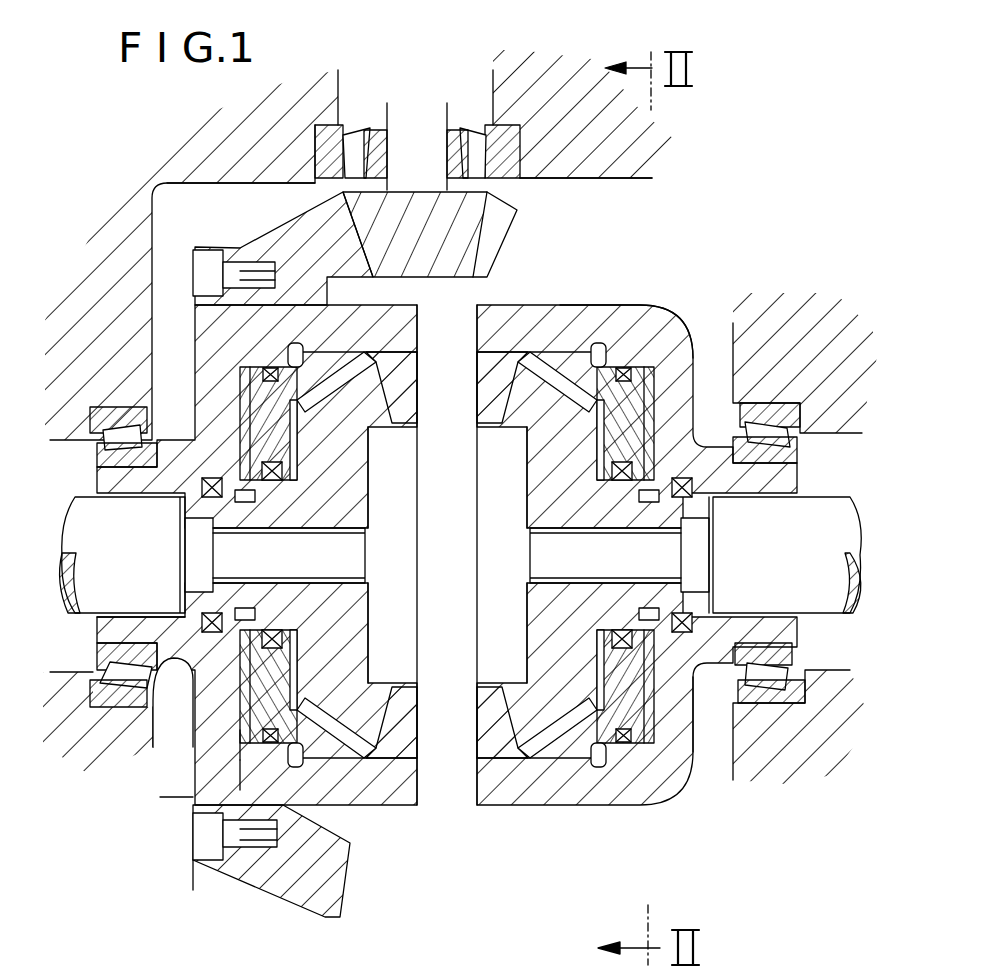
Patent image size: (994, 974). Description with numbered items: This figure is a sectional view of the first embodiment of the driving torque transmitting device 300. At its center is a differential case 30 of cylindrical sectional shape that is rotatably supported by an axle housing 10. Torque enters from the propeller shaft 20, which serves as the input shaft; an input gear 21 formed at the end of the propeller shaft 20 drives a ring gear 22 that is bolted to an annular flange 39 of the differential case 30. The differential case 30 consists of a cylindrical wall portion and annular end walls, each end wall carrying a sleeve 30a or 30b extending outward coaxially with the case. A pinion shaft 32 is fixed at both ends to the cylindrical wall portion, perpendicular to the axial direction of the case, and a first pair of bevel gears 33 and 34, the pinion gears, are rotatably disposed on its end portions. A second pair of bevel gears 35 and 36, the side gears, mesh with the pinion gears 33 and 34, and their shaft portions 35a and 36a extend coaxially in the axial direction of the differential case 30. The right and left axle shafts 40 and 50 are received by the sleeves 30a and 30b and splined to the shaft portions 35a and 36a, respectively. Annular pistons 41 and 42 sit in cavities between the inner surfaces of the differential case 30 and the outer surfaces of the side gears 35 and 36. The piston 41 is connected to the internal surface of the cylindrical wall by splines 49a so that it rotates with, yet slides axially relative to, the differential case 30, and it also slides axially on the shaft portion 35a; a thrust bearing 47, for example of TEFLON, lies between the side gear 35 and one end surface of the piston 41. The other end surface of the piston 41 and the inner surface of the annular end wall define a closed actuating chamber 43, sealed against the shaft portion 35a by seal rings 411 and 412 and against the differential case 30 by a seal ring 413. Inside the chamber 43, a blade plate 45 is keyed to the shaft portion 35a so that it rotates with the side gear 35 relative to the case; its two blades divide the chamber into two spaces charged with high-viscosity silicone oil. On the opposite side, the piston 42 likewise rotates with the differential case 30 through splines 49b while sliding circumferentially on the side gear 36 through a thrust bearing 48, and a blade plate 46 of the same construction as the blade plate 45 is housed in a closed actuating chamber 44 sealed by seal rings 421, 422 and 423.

The axle housing 10 is at (782, 310).
The propeller shaft 20 is at (411, 128).
The input gear 21 is at (483, 238).
The ring gear 22 is at (278, 243).
The differential case 30 is at (625, 305).
The sleeve 30a is at (768, 477).
The sleeve 30b is at (118, 478).
The driving torque transmitting device 300 is at (668, 300).
The pinion shaft 32 is at (452, 785).
The bevel gear (pinion gear) 33 is at (495, 410).
The bevel gear (pinion gear) 34 is at (497, 695).
The bevel gear (side gear) 35 is at (545, 506).
The shaft portion 35a is at (627, 613).
The bevel gear (side gear) 36 is at (357, 508).
The shaft portion 36a is at (270, 605).
The annular flange 39 is at (200, 317).
The right axle shaft 40 is at (830, 580).
The annular piston 41 is at (610, 760).
The seal ring 411 is at (700, 620).
The seal ring 412 is at (700, 693).
The seal ring 413 is at (627, 787).
The annular piston 42 is at (282, 850).
The seal ring 421 is at (105, 626).
The seal ring 422 is at (247, 727).
The seal ring 423 is at (247, 747).
The closed actuating chamber 43 is at (640, 755).
The closed actuating chamber 44 is at (160, 797).
The blade plate 45 is at (628, 775).
The blade plate 46 is at (245, 686).
The thrust bearing 47 is at (523, 790).
The thrust bearing 48 is at (340, 763).
The splines 49a is at (573, 790).
The splines 49b is at (337, 743).
The left axle shaft 50 is at (80, 548).